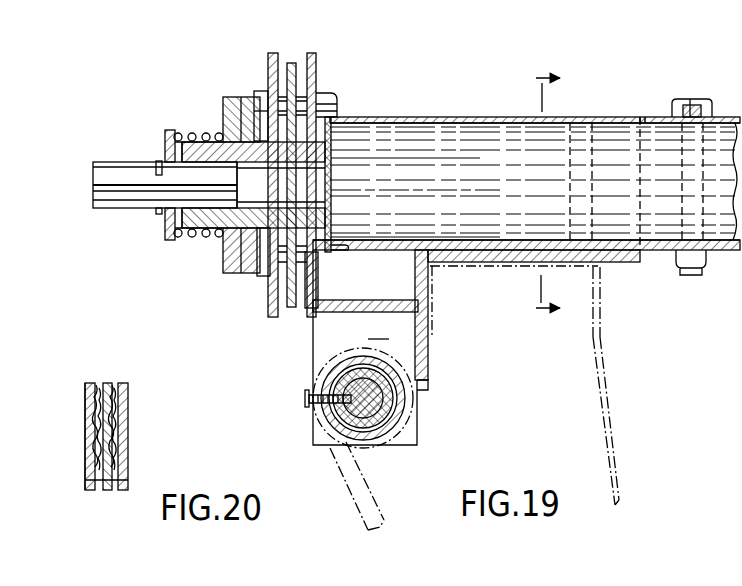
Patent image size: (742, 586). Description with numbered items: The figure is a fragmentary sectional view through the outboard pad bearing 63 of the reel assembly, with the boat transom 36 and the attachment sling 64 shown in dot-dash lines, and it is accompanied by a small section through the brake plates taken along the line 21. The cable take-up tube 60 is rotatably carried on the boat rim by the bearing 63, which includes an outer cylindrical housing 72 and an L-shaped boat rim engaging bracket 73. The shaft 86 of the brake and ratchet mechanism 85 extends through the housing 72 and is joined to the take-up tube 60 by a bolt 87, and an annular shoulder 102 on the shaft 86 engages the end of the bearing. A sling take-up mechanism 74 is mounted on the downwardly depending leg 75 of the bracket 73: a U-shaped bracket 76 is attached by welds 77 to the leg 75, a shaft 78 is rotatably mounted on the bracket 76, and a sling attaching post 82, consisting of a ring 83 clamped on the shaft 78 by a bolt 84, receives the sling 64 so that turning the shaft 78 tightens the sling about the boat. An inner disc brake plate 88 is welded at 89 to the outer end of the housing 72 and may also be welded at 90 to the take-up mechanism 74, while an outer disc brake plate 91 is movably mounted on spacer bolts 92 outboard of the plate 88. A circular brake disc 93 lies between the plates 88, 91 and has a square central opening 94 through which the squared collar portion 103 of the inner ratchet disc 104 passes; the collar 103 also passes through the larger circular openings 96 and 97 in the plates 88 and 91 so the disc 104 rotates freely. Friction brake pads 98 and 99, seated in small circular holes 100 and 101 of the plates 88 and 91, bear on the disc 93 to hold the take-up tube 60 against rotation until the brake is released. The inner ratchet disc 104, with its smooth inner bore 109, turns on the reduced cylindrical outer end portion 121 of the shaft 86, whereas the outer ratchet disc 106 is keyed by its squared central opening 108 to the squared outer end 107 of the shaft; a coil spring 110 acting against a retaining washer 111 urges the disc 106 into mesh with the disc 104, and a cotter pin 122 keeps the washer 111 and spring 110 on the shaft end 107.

In FIG. 19, the section line 21- 21 is at (545, 194).
In FIG. 19, the transom 36 is at (600, 378).
In FIG. 19, the cable take-up tube 60 is at (720, 117).
In FIG. 19, the pad bearing 63 is at (485, 108).
In FIG. 19, the sling 64 is at (367, 478).
In FIG. 19, the outer cylindrical housing 72 is at (608, 118).
In FIG. 19, the L-shaped boat rim engaging bracket 73 is at (512, 264).
In FIG. 19, the sling take-up mechanism 74 is at (430, 408).
In FIG. 19, the downwardly depending leg 75 is at (425, 355).
In FIG. 19, the U-shaped bracket 76 is at (365, 347).
In FIG. 19, the welds 77 is at (428, 302).
In FIG. 19, the shaft 78 is at (370, 410).
In FIG. 19, the sling attaching post 82 is at (322, 421).
In FIG. 19, the ring 83 is at (392, 392).
In FIG. 19, the bolt 84 is at (304, 399).
In FIG. 19, the mechanism 85 is at (208, 90).
In FIG. 19, the shaft 86 is at (535, 160).
In FIG. 19, the bolts 87 is at (688, 100).
In FIG. 19, the inner disc brake plate 88 is at (315, 72).
In FIG. 20, the inner disc brake plate 88 is at (128, 456).
In FIG. 19, the weld 89 is at (325, 92).
In FIG. 19, the weld 90 is at (335, 300).
In FIG. 19, the outer disc brake plate 91 is at (268, 305).
In FIG. 20, the outer disc brake plate 91 is at (85, 481).
In FIG. 19, the spacer bolts 92 is at (262, 90).
In FIG. 19, the brake disc 93 is at (291, 308).
In FIG. 20, the brake disc 93 is at (107, 492).
In FIG. 19, the square central opening 94 is at (286, 165).
In FIG. 19, the circular opening 96 is at (340, 250).
In FIG. 19, the circular opening 97 is at (250, 132).
In FIG. 20, the friction brake pad 98 is at (130, 394).
In FIG. 20, the friction brake pad 99 is at (85, 400).
In FIG. 20, the circular hole 100 is at (128, 430).
In FIG. 20, the circular hole 101 is at (96, 431).
In FIG. 19, the annular shoulder 102 is at (330, 140).
In FIG. 19, the squared collar portion 103 is at (333, 225).
In FIG. 19, the inner ratchet disc 104 is at (240, 92).
In FIG. 19, the outer ratchet disc 106 is at (240, 270).
In FIG. 19, the squared outer end 107 is at (108, 205).
In FIG. 19, the squared central opening 108 is at (202, 212).
In FIG. 19, the smooth inner bore 109 is at (340, 195).
In FIG. 19, the coil spring 110 is at (183, 132).
In FIG. 19, the retaining washer 111 is at (165, 132).
In FIG. 19, the reduced cylindrical outer end portion 121 is at (333, 172).
In FIG. 19, the cotter pin 122 is at (157, 217).